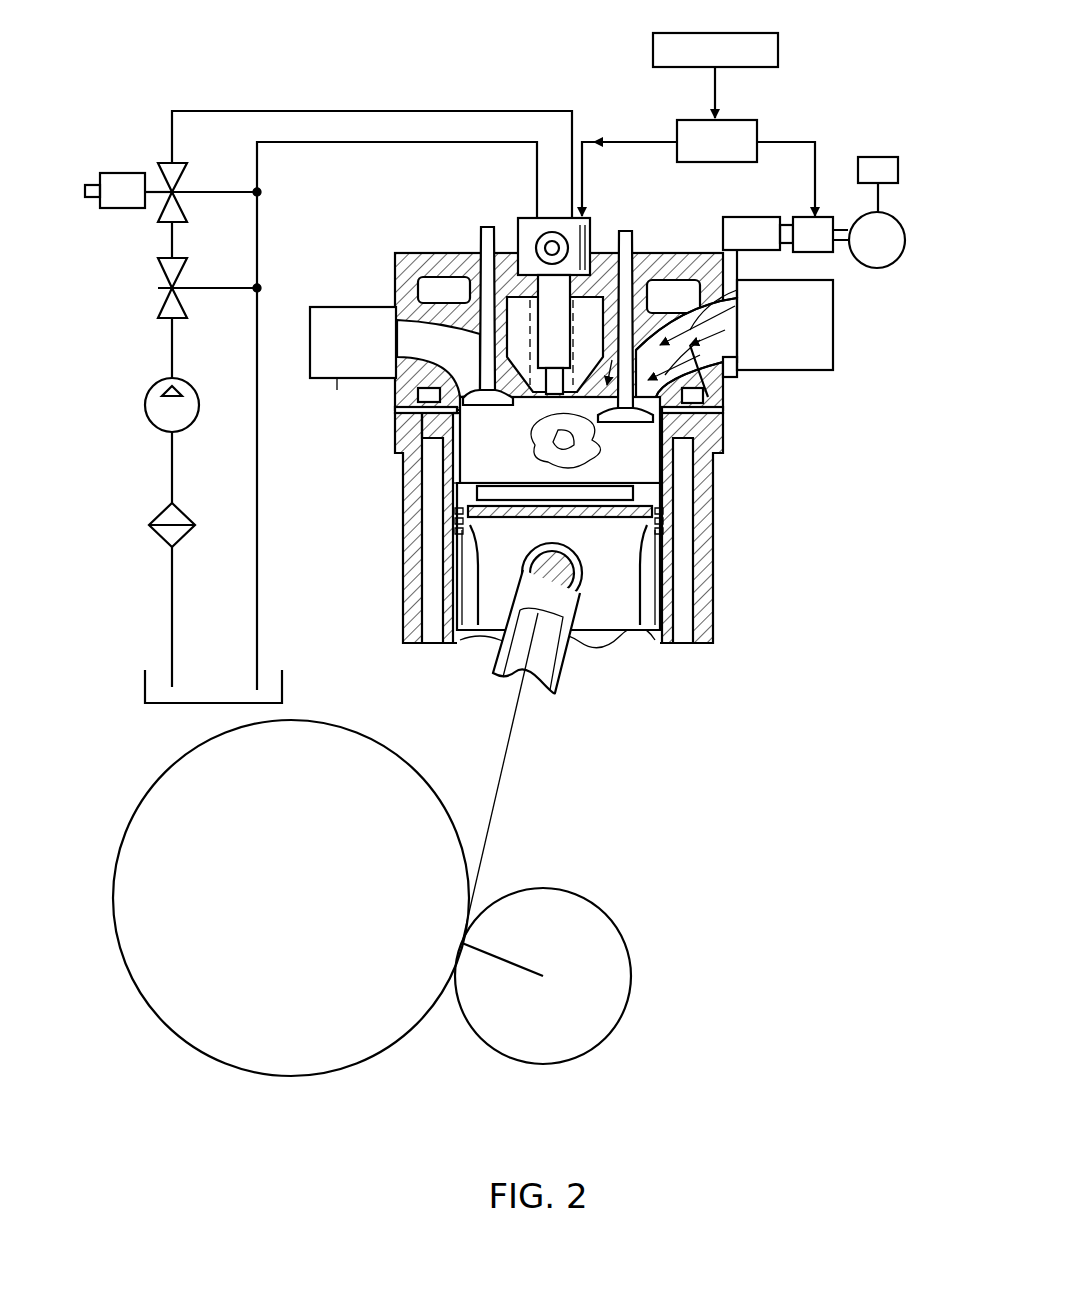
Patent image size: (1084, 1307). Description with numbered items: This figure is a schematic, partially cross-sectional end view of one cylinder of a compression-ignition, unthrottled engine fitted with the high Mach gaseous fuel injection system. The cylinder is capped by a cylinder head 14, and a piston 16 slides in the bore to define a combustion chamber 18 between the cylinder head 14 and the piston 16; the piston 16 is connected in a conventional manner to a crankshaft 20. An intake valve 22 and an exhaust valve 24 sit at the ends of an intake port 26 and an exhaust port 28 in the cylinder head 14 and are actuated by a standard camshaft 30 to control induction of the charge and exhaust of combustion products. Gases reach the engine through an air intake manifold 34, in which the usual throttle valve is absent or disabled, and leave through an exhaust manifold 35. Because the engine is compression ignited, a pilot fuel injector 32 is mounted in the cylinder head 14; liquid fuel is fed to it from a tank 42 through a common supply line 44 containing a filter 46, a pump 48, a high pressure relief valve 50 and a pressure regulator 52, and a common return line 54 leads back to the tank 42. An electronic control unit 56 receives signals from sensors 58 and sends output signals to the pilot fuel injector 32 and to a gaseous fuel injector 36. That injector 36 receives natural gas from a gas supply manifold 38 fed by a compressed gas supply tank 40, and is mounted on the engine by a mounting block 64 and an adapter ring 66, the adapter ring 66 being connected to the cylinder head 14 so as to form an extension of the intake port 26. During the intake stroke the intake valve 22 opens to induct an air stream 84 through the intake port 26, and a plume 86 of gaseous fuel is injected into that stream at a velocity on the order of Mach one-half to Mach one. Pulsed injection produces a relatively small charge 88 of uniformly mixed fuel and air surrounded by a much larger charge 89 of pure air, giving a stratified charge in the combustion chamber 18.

The cylinder head 14 is at (405, 252).
The piston 16 is at (657, 498).
The combustion chamber 18 is at (472, 462).
The crankshaft 20 is at (628, 963).
The intake valve 22 is at (633, 233).
The exhaust valve 24 is at (482, 237).
The intake port 26 is at (708, 376).
The exhaust port 28 is at (397, 337).
The camshaft 30 is at (152, 992).
The pilot fuel injector 32 is at (590, 217).
The air intake manifold 34 is at (836, 330).
The exhaust manifold 35 is at (337, 380).
The gaseous fuel injector 36 is at (803, 217).
The gas supply manifold 38 is at (888, 227).
The compressed gas supply tank 40 is at (878, 157).
The tank 42 is at (283, 690).
The common supply line 44 is at (332, 111).
The filter 46 is at (180, 517).
The pump 48 is at (190, 397).
The high pressure relief valve 50 is at (177, 303).
The pressure regulator 52 is at (172, 163).
The common return line 54 is at (258, 513).
The electronic control unit 56 is at (757, 133).
The sensors 58 is at (780, 50).
The mounting block 64 is at (757, 217).
The adapter ring 66 is at (738, 293).
The air stream 84 is at (733, 338).
The plume 86 is at (732, 307).
The charge of uniformly mixed fuel and air 88 is at (537, 433).
The charge of pure air 89 is at (615, 451).